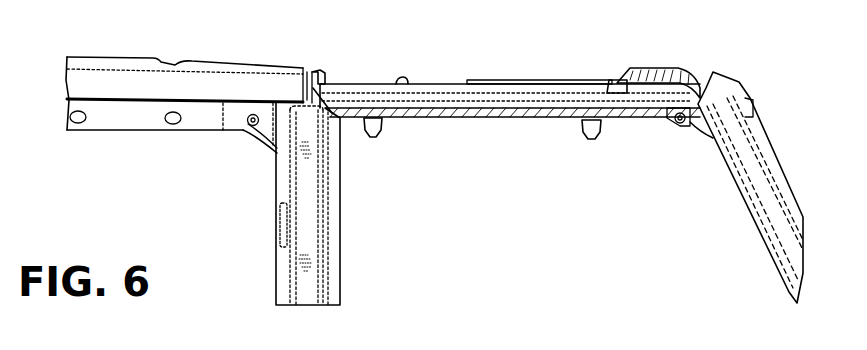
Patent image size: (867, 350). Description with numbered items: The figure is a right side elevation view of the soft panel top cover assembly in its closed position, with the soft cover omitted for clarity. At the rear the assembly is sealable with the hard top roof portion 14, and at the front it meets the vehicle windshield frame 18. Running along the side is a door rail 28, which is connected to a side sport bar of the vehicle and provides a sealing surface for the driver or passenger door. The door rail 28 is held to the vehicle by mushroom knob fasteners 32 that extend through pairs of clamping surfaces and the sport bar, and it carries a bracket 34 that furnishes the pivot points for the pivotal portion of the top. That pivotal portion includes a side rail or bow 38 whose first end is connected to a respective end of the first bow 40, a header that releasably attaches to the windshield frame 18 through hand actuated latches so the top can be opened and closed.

The hard top roof portion 14 is at (192, 52).
The windshield frame 18 is at (712, 78).
The door rail 28 is at (548, 115).
The mushroom knob fastener 32 is at (373, 138).
The bracket 34 is at (406, 78).
The side rail or bow 38 is at (613, 79).
The first bow 40 is at (684, 68).